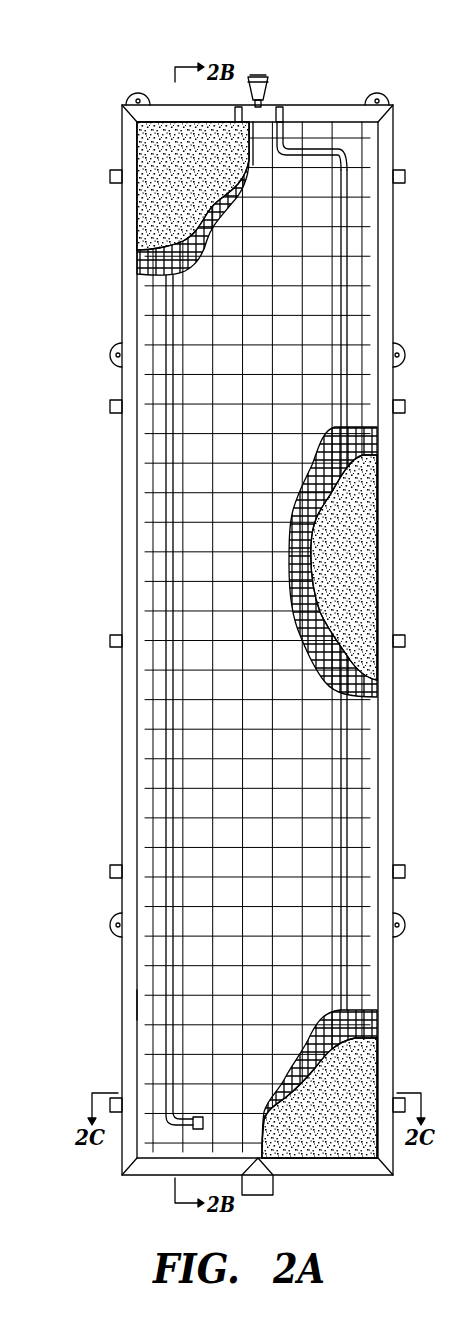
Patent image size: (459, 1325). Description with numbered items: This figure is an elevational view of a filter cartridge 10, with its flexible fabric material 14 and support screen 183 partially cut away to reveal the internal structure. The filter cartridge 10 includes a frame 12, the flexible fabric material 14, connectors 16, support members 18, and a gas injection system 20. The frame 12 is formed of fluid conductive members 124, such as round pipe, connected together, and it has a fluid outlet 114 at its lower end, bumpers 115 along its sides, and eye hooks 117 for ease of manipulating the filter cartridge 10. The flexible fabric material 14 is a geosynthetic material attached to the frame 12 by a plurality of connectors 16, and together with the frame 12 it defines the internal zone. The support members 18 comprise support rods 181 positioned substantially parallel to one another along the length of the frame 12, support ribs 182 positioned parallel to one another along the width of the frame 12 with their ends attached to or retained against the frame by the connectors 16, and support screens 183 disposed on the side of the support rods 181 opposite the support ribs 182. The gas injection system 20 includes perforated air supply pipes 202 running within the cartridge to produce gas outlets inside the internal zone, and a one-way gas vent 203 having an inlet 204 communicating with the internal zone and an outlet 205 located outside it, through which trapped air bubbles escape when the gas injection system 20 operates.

The filter cartridge 10 is at (91, 119).
The frame 12 is at (371, 241).
The flexible fabric material 14 is at (355, 538).
The connectors 16 is at (355, 110).
The support members 18 is at (185, 338).
The gas injection system 20 is at (288, 136).
The fluid outlet 114 is at (270, 1185).
The bumpers 115 is at (111, 637).
The eye hooks 117 is at (115, 923).
The fluid conductive members 124 is at (143, 1003).
The support rods 181 is at (213, 450).
The support ribs 182 is at (198, 523).
The support screens 183 is at (355, 443).
The perforated air supply pipes 202 is at (348, 273).
The one-way gas vent 203 is at (252, 58).
The inlet 204 is at (250, 103).
The outlet 205 is at (262, 78).